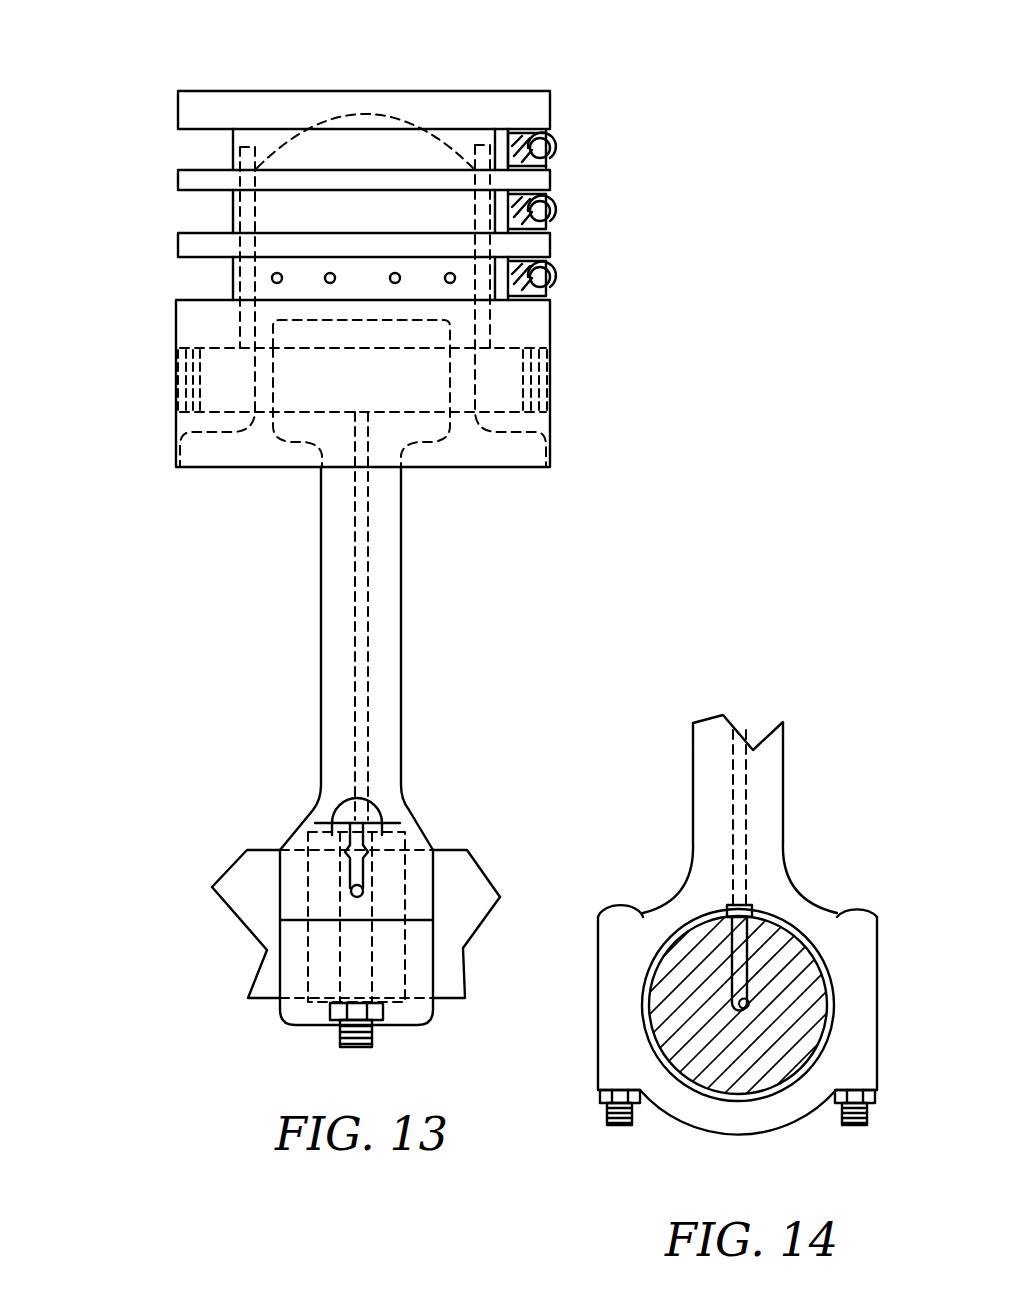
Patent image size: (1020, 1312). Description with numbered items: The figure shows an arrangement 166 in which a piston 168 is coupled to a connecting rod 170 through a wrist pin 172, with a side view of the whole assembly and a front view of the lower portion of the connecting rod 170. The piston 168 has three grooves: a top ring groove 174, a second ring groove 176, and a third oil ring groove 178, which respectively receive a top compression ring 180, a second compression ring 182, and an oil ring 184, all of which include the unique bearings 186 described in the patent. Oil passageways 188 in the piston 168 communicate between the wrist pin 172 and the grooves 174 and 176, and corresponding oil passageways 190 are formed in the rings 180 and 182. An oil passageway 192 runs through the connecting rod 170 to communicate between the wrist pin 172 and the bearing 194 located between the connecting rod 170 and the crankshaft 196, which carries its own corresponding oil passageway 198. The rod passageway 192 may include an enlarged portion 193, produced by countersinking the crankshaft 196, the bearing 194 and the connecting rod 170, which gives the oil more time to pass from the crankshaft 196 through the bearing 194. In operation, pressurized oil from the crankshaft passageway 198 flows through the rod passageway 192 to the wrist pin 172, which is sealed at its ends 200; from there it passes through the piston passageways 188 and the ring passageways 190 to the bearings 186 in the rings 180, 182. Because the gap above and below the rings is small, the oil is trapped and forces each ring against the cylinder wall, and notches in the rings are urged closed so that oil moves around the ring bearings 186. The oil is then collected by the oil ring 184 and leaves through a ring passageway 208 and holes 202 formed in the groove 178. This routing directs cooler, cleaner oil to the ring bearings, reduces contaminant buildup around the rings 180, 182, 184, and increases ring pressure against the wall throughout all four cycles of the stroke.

In FIG. 13, the arrangement 166 is at (181, 518).
In FIG. 13, the piston 168 is at (178, 110).
In FIG. 13, the connecting rod 170 is at (320, 628).
In FIG. 13, the wrist pin 172 is at (437, 393).
In FIG. 13, the top ring groove 174 is at (186, 146).
In FIG. 13, the second ring groove 176 is at (173, 222).
In FIG. 13, the third oil ring groove 178 is at (181, 282).
In FIG. 13, the top compression ring 180 is at (553, 133).
In FIG. 13, the second compression ring 182 is at (553, 190).
In FIG. 13, the oil ring 184 is at (553, 258).
In FIG. 13, the bearings 186 is at (552, 150).
In FIG. 13, the oil passageways 188 is at (230, 324).
In FIG. 13, the oil passageways 190 is at (553, 170).
In FIG. 13, the oil passageway 192 is at (359, 681).
In FIG. 14, the oil passageway 192 is at (748, 840).
In FIG. 13, the enlarged portion 193 is at (370, 841).
In FIG. 14, the enlarged portion 193 is at (753, 904).
In FIG. 13, the bearing 194 is at (330, 877).
In FIG. 14, the bearing 194 is at (674, 1065).
In FIG. 14, the crankshaft 196 is at (806, 997).
In FIG. 14, the oil passageway 198 is at (732, 1005).
In FIG. 13, the ends 200 is at (180, 400).
In FIG. 13, the holes 202 is at (395, 272).
In FIG. 13, the ring passageway 208 is at (553, 298).